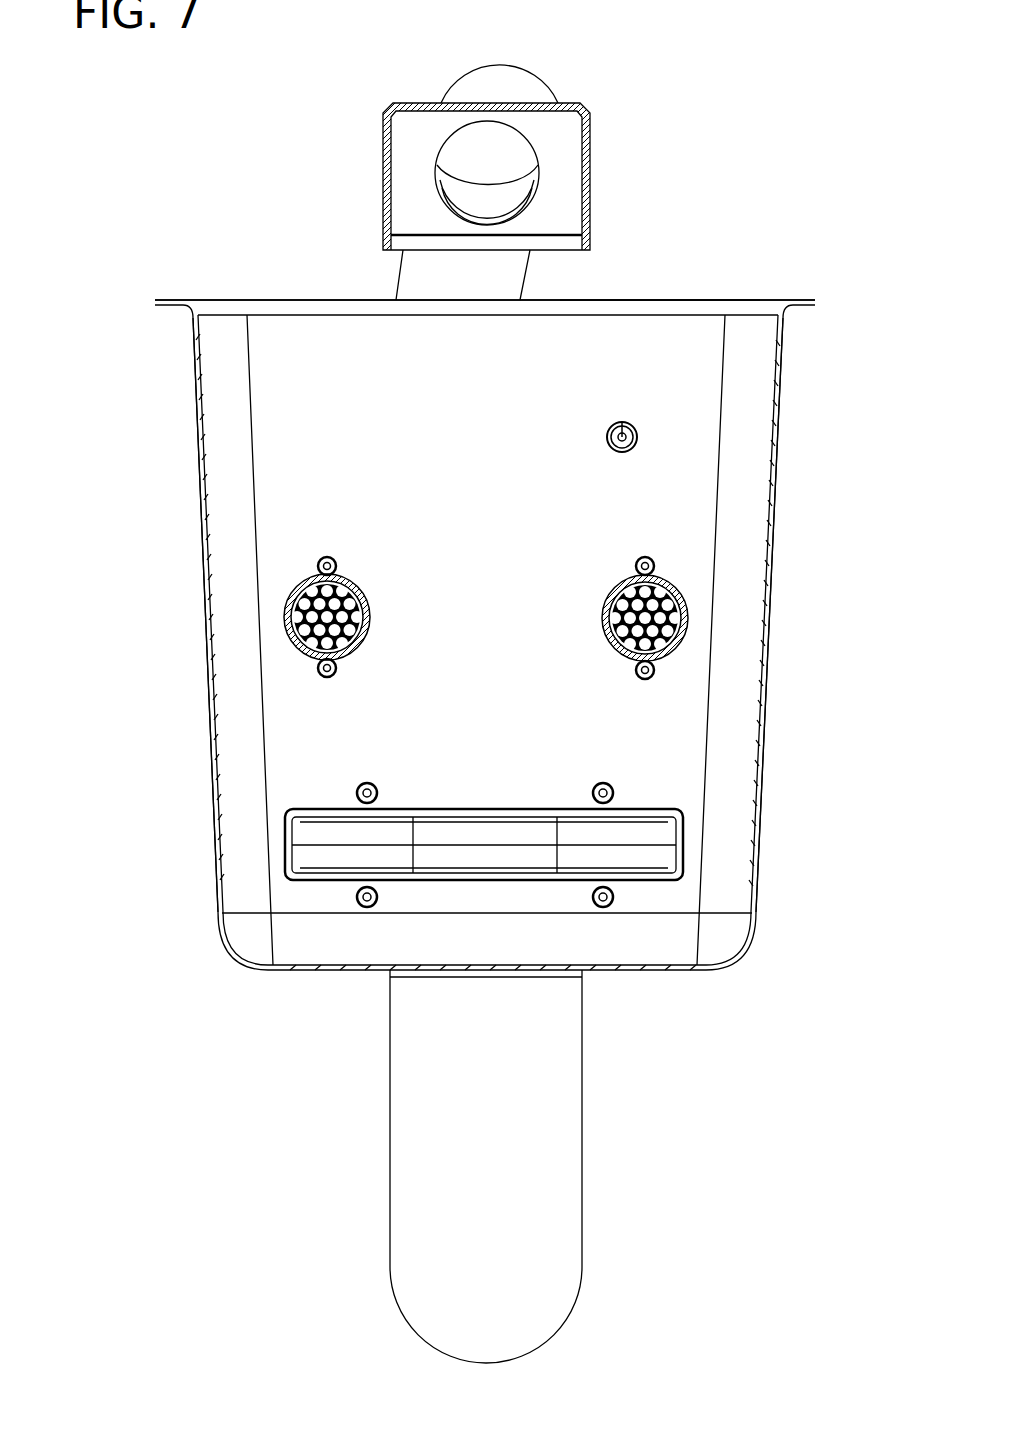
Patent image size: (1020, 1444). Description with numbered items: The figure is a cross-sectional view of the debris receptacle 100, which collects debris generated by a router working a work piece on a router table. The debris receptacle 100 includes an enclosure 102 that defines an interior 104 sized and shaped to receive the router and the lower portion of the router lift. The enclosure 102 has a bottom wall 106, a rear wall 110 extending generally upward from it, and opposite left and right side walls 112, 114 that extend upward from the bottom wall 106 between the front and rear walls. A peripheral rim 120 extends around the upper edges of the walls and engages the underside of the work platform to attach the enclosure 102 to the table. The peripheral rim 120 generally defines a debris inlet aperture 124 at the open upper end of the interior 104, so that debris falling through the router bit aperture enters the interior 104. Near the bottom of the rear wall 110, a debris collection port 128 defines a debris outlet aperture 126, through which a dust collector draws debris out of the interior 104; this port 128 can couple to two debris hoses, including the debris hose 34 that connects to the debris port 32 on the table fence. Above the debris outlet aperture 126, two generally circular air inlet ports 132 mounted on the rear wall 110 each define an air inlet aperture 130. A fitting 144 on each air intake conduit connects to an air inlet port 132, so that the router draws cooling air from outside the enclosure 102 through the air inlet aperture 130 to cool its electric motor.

The debris hose 34 is at (545, 66).
The debris port 32 is at (586, 106).
The debris receptacle 100 is at (808, 168).
The peripheral rim 120 is at (818, 295).
The debris inlet aperture 124 is at (654, 305).
The rear wall 110 is at (448, 413).
The left side wall 112 is at (197, 443).
The right side wall 114 is at (780, 433).
The interior 104 is at (511, 513).
The enclosure 102 is at (790, 580).
The air inlet port 132 is at (310, 573).
The air inlet aperture 130 is at (343, 582).
The fitting 144 is at (363, 640).
The debris collection port 128 is at (424, 822).
The debris outlet aperture 126 is at (588, 833).
The bottom wall 106 is at (644, 972).